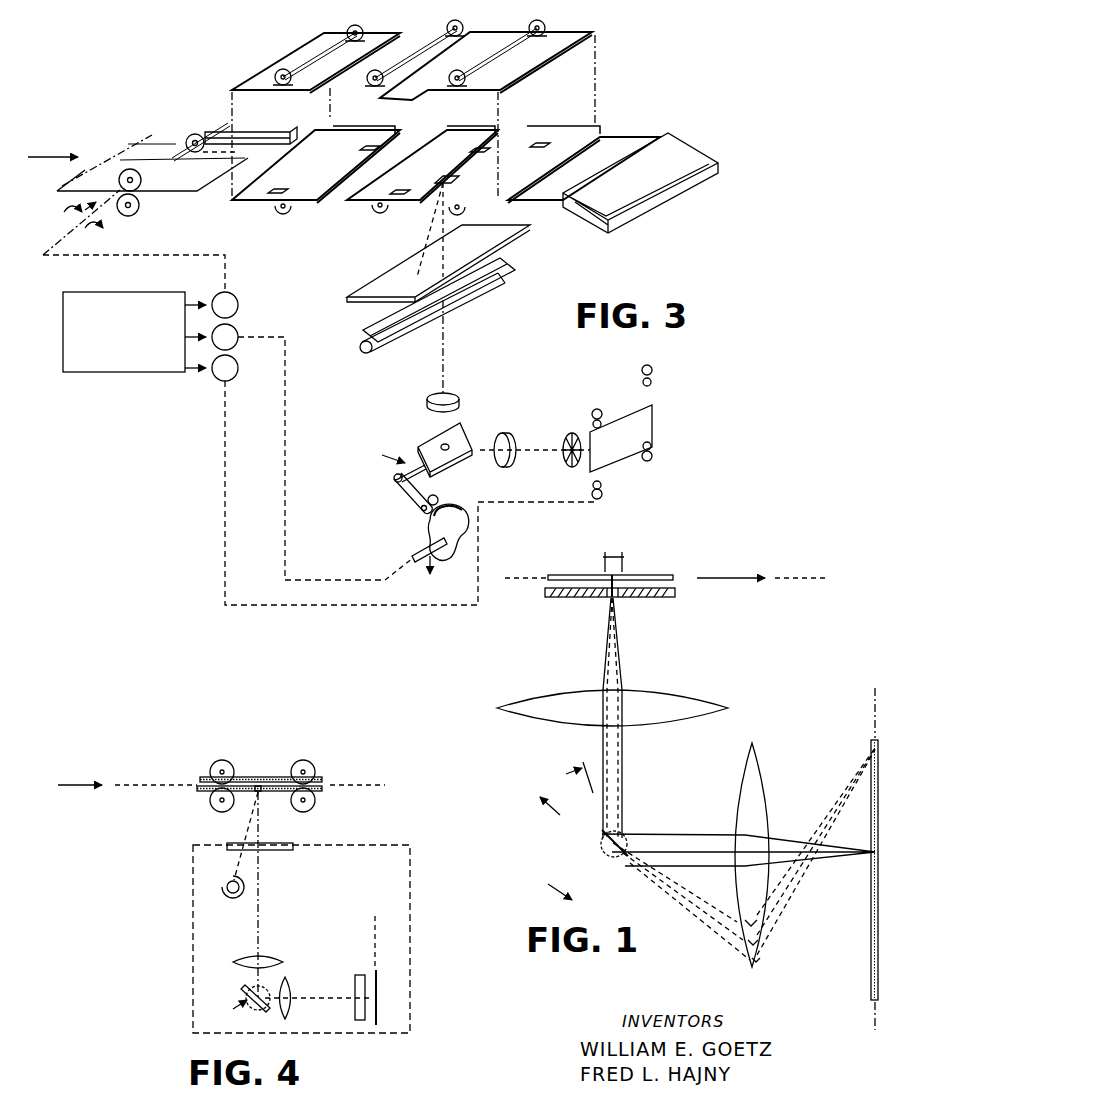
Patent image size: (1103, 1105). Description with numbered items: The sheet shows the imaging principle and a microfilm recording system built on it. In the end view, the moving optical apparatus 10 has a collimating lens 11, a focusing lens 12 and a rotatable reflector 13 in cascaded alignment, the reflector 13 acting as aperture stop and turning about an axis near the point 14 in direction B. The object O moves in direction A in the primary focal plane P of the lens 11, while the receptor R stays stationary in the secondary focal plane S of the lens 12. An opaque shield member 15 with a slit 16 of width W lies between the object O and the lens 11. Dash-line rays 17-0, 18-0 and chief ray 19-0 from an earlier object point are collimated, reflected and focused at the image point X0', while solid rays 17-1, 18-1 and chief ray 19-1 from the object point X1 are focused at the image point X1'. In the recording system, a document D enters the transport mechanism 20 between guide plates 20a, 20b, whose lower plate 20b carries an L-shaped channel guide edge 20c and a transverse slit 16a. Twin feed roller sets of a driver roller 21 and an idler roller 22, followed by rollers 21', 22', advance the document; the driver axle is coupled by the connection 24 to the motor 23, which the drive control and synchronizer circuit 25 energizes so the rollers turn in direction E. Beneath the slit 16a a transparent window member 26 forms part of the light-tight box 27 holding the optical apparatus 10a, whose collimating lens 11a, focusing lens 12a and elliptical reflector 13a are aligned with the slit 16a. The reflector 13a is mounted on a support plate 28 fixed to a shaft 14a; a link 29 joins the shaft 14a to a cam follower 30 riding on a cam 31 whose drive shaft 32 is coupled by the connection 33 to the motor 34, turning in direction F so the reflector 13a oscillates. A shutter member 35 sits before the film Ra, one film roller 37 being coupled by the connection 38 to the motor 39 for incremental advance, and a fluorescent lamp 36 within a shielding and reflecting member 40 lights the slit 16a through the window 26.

In FIG. 3, the document guide and feed transport mechanism 20 is at (150, 100).
In FIG. 4, the document guide and feed transport mechanism 20 is at (333, 771).
In FIG. 3, the guide plate 20a is at (592, 32).
In FIG. 4, the guide plate 20a is at (248, 778).
In FIG. 3, the lower guide plate member 20b is at (553, 198).
In FIG. 4, the lower guide plate member 20b is at (320, 790).
In FIG. 3, the L-shaped channel guide edge 20c is at (670, 134).
In FIG. 3, the driver roller 21 is at (139, 209).
In FIG. 3, the driver roller 21' is at (370, 168).
In FIG. 3, the idler roller 22 is at (161, 147).
In FIG. 3, the idler roller 22' is at (397, 43).
In FIG. 3, the elongated slit 16a is at (452, 176).
In FIG. 4, the elongated slit 16a is at (259, 793).
In FIG. 3, the mechanical connection 24 is at (198, 253).
In FIG. 3, the drive control and synchronizer circuit 25 is at (158, 293).
In FIG. 3, the driving motor 23 is at (236, 304).
In FIG. 3, the motor 34 is at (237, 334).
In FIG. 3, the motor 39 is at (238, 368).
In FIG. 3, the transparent window member 26 is at (364, 296).
In FIG. 4, the transparent window member 26 is at (292, 846).
In FIG. 3, the fluorescent lamp 36 is at (467, 287).
In FIG. 4, the fluorescent lamp 36 is at (232, 880).
In FIG. 3, the light shielding and reflecting member 40 is at (374, 352).
In FIG. 4, the light shielding and reflecting member 40 is at (224, 893).
In FIG. 3, the moving optical apparatus 10a is at (498, 398).
In FIG. 4, the moving optical apparatus 10a is at (297, 937).
In FIG. 3, the collimating lens 11a is at (443, 398).
In FIG. 4, the collimating lens 11a is at (245, 958).
In FIG. 3, the elliptical-shaped reflector 13a is at (434, 444).
In FIG. 4, the elliptical-shaped reflector 13a is at (246, 990).
In FIG. 3, the point 14 is at (450, 446).
In FIG. 1, the point 14 is at (606, 855).
In FIG. 3, the support plate member 28 is at (457, 463).
In FIG. 3, the shaft 14a is at (400, 470).
In FIG. 3, the link 29 is at (408, 505).
In FIG. 3, the cam follower 30 is at (440, 498).
In FIG. 3, the cam 31 is at (470, 536).
In FIG. 3, the drive shaft 32 is at (420, 556).
In FIG. 3, the focusing lens 12a is at (509, 436).
In FIG. 4, the focusing lens 12a is at (290, 1008).
In FIG. 3, the shutter member 35 is at (572, 434).
In FIG. 4, the shutter member 35 is at (360, 976).
In FIG. 3, the film roller 37 is at (604, 490).
In FIG. 3, the mechanical coupling 33 is at (287, 556).
In FIG. 3, the mechanical coupling 38 is at (393, 609).
In FIG. 4, the light tight container 27 is at (411, 931).
In FIG. 1, the opaque shield member 15 is at (673, 598).
In FIG. 1, the elongated slit 16 is at (614, 598).
In FIG. 1, the moving optical apparatus 10 is at (752, 663).
In FIG. 1, the light ray 17-1 is at (602, 686).
In FIG. 1, the light ray 18-1 is at (624, 686).
In FIG. 1, the light ray 17-0 is at (610, 764).
In FIG. 1, the light ray 18-0 is at (621, 744).
In FIG. 1, the chief ray 19-0 is at (712, 927).
In FIG. 1, the chief ray 19-1 is at (686, 844).
In FIG. 1, the collimating lens 11 is at (691, 704).
In FIG. 1, the focusing lens 12 is at (752, 752).
In FIG. 1, the reflector 13 is at (600, 844).
In FIG. 1, the image receptor R is at (878, 790).
In FIG. 3, the film Ra is at (655, 420).
In FIG. 4, the film Ra is at (378, 982).
In FIG. 4, the secondary focal plane S is at (375, 915).
In FIG. 1, the secondary focal plane S is at (872, 697).
In FIG. 4, the primary focal plane P is at (380, 787).
In FIG. 1, the primary focal plane P is at (530, 576).
In FIG. 1, the object O is at (564, 570).
In FIG. 3, the direction of object movement A is at (48, 161).
In FIG. 4, the direction of object movement A is at (67, 770).
In FIG. 1, the direction of object movement A is at (730, 578).
In FIG. 3, the direction of reflector rotation B is at (386, 452).
In FIG. 4, the direction of reflector rotation B is at (233, 1011).
In FIG. 1, the direction of reflector rotation B is at (553, 890).
In FIG. 3, the document D is at (122, 156).
In FIG. 4, the document D is at (177, 768).
In FIG. 3, the direction of driver roller rotation E is at (97, 195).
In FIG. 3, the direction of cam rotation F is at (436, 574).
In FIG. 1, the slit width W is at (616, 557).
In FIG. 1, the object point X1 is at (591, 557).
In FIG. 1, the conjugate image point X0' is at (859, 734).
In FIG. 1, the conjugate image point X1' is at (865, 836).